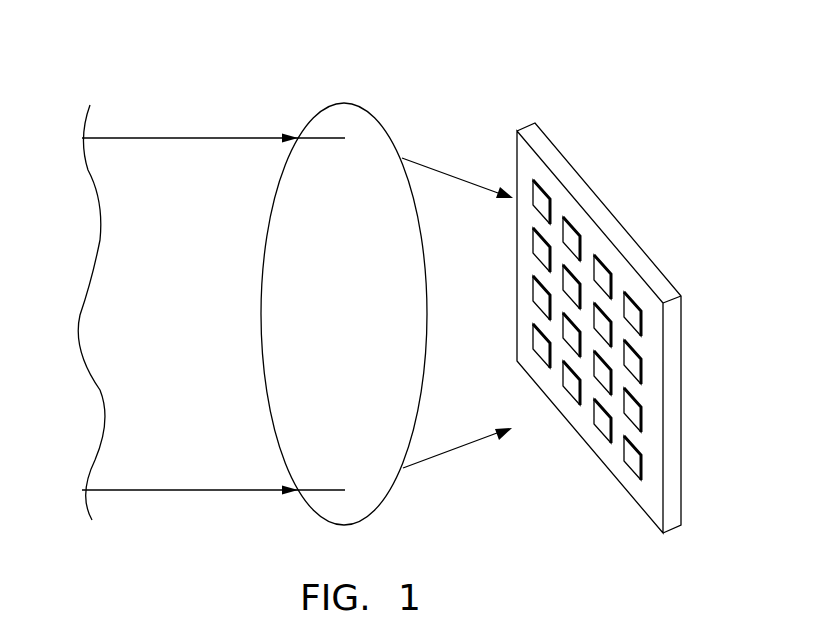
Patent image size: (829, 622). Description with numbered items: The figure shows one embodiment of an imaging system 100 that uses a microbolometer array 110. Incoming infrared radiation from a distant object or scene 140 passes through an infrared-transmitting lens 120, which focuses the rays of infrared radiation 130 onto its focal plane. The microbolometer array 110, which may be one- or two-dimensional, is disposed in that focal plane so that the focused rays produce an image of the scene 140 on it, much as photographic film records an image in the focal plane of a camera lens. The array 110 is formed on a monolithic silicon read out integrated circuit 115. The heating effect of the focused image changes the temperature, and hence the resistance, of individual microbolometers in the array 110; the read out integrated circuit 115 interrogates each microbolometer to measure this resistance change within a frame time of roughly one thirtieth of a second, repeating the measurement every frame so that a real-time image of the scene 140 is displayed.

The imaging system 100 is at (551, 82).
The microbolometer array 110 is at (632, 298).
The read out integrated circuit 115 is at (682, 410).
The infrared-transmitting lens 120 is at (345, 103).
The rays of infrared radiation 130 is at (457, 452).
The distant object or scene 140 is at (80, 313).